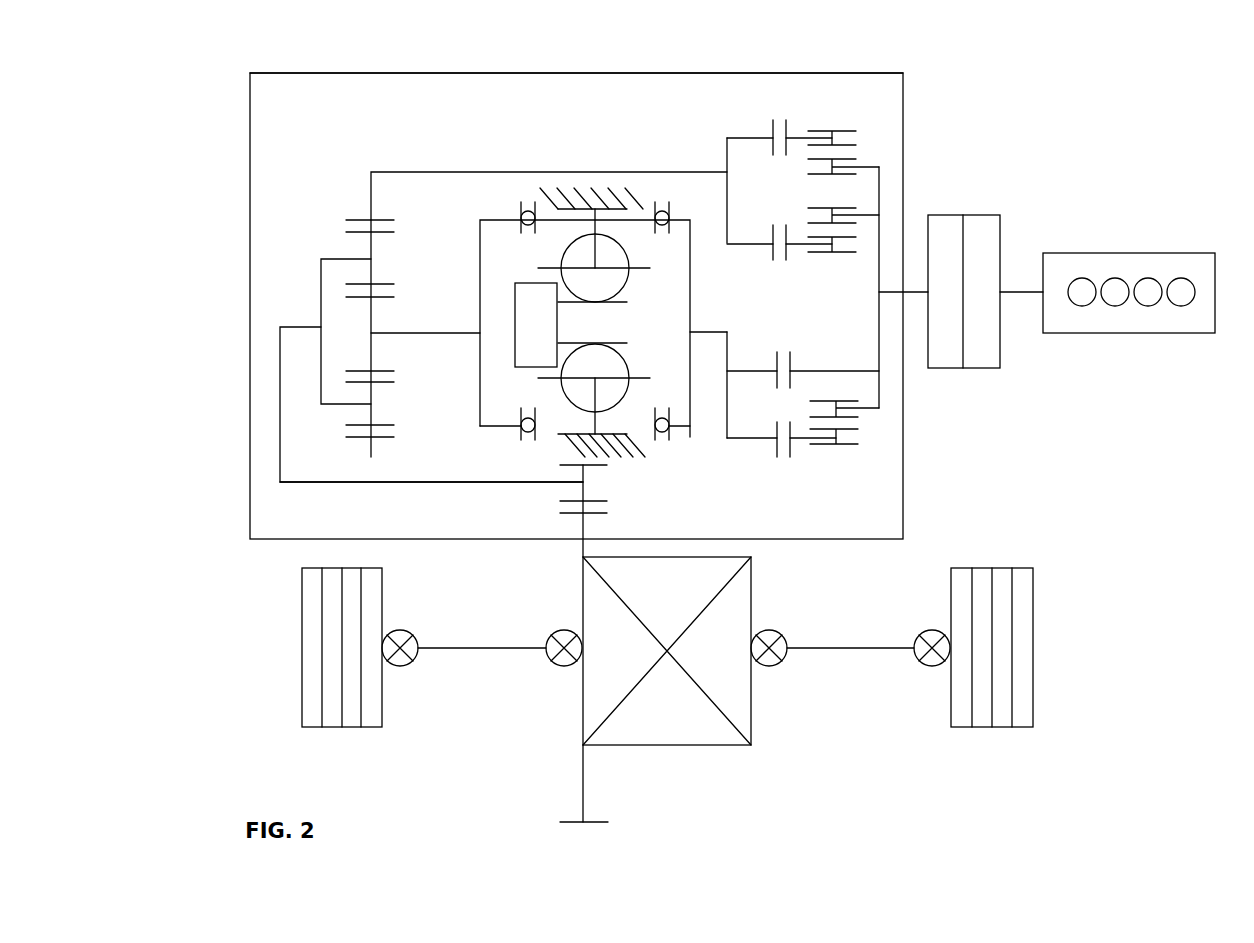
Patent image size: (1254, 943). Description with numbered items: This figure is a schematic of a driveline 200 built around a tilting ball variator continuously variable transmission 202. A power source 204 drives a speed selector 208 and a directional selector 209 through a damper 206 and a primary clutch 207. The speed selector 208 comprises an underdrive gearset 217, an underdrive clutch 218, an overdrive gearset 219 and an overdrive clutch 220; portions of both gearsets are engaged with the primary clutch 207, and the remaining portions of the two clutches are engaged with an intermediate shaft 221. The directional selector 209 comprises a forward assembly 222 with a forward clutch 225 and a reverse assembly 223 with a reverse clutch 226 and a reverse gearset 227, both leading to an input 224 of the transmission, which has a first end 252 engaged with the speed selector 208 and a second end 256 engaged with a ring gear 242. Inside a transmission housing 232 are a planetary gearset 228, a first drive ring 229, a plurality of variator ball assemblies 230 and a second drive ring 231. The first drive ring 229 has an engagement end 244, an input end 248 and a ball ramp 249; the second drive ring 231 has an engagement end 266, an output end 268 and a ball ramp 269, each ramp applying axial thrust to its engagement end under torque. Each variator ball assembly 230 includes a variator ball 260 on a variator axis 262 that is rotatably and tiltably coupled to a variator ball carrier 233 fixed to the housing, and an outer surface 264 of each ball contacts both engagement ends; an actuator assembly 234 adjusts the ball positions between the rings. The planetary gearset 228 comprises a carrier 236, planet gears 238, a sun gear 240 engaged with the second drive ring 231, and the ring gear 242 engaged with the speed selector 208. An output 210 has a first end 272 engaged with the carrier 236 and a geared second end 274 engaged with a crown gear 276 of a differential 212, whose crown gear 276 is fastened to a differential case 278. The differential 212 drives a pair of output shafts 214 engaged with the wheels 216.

The driveline 200 is at (997, 76).
The continuously variable transmission 202 is at (458, 99).
The power source 204 is at (1125, 253).
The damper 206 is at (969, 288).
The primary clutch 207 is at (953, 368).
The speed selector 208 is at (821, 278).
The directional selector 209 is at (880, 440).
The output 210 is at (415, 490).
The differential 212 is at (660, 698).
The output shafts 214 is at (480, 648).
The wheels 216 is at (318, 727).
The underdrive gearset 217 is at (866, 257).
The underdrive clutch 218 is at (789, 258).
The overdrive gearset 219 is at (870, 150).
The overdrive clutch 220 is at (789, 128).
The intermediate shaft 221 is at (499, 172).
The forward assembly 222 is at (804, 337).
The reverse assembly 223 is at (795, 486).
The input 224 is at (903, 232).
The forward clutch 225 is at (792, 363).
The reverse clutch 226 is at (770, 442).
The reverse gearset 227 is at (858, 456).
The planetary gearset 228 is at (488, 290).
The first drive ring 229 is at (727, 192).
The variator ball assemblies 230 is at (614, 210).
The second drive ring 231 is at (484, 432).
The transmission housing 232 is at (618, 73).
The variator ball carrier 233 is at (582, 222).
The actuator assembly 234 is at (480, 360).
The carrier 236 is at (321, 289).
The planet gears 238 is at (388, 265).
The sun gear 240 is at (388, 312).
The ring gear 242 is at (388, 223).
The engagement end 244 is at (614, 413).
The input end 248 is at (712, 332).
The ball ramp 249 is at (660, 412).
The first end 252 is at (678, 172).
The second end 256 is at (393, 172).
The variator ball 260 is at (636, 288).
The variator axis 262 is at (572, 380).
The outer surface 264 is at (635, 251).
The engagement end 266 is at (572, 412).
The output end 268 is at (390, 336).
The ball ramp 269 is at (520, 214).
The first end 272 is at (280, 347).
The second end 274 is at (522, 484).
The crown gear 276 is at (583, 782).
The differential case 278 is at (751, 575).